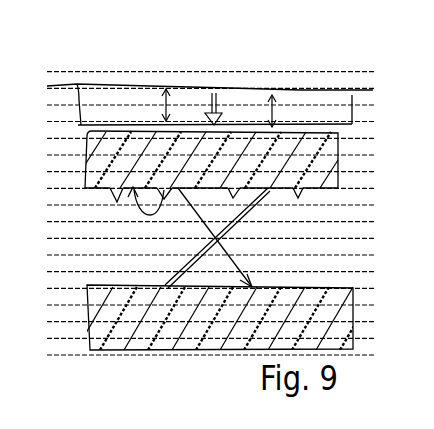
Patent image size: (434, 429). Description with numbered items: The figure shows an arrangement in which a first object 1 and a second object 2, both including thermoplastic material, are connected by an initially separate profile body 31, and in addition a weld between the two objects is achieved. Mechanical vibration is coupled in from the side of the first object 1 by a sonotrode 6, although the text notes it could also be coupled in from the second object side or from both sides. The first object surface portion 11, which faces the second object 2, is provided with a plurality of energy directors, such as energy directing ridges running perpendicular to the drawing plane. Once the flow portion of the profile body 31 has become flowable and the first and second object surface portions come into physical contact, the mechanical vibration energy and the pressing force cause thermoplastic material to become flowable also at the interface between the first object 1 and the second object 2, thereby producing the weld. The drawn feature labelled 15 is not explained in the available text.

The first object 1 is at (283, 167).
The second object 2 is at (310, 293).
The sonotrode 6 is at (132, 107).
The first object surface portion 11 is at (164, 190).
The groove 15 is at (302, 192).
The profile body 31 is at (200, 217).